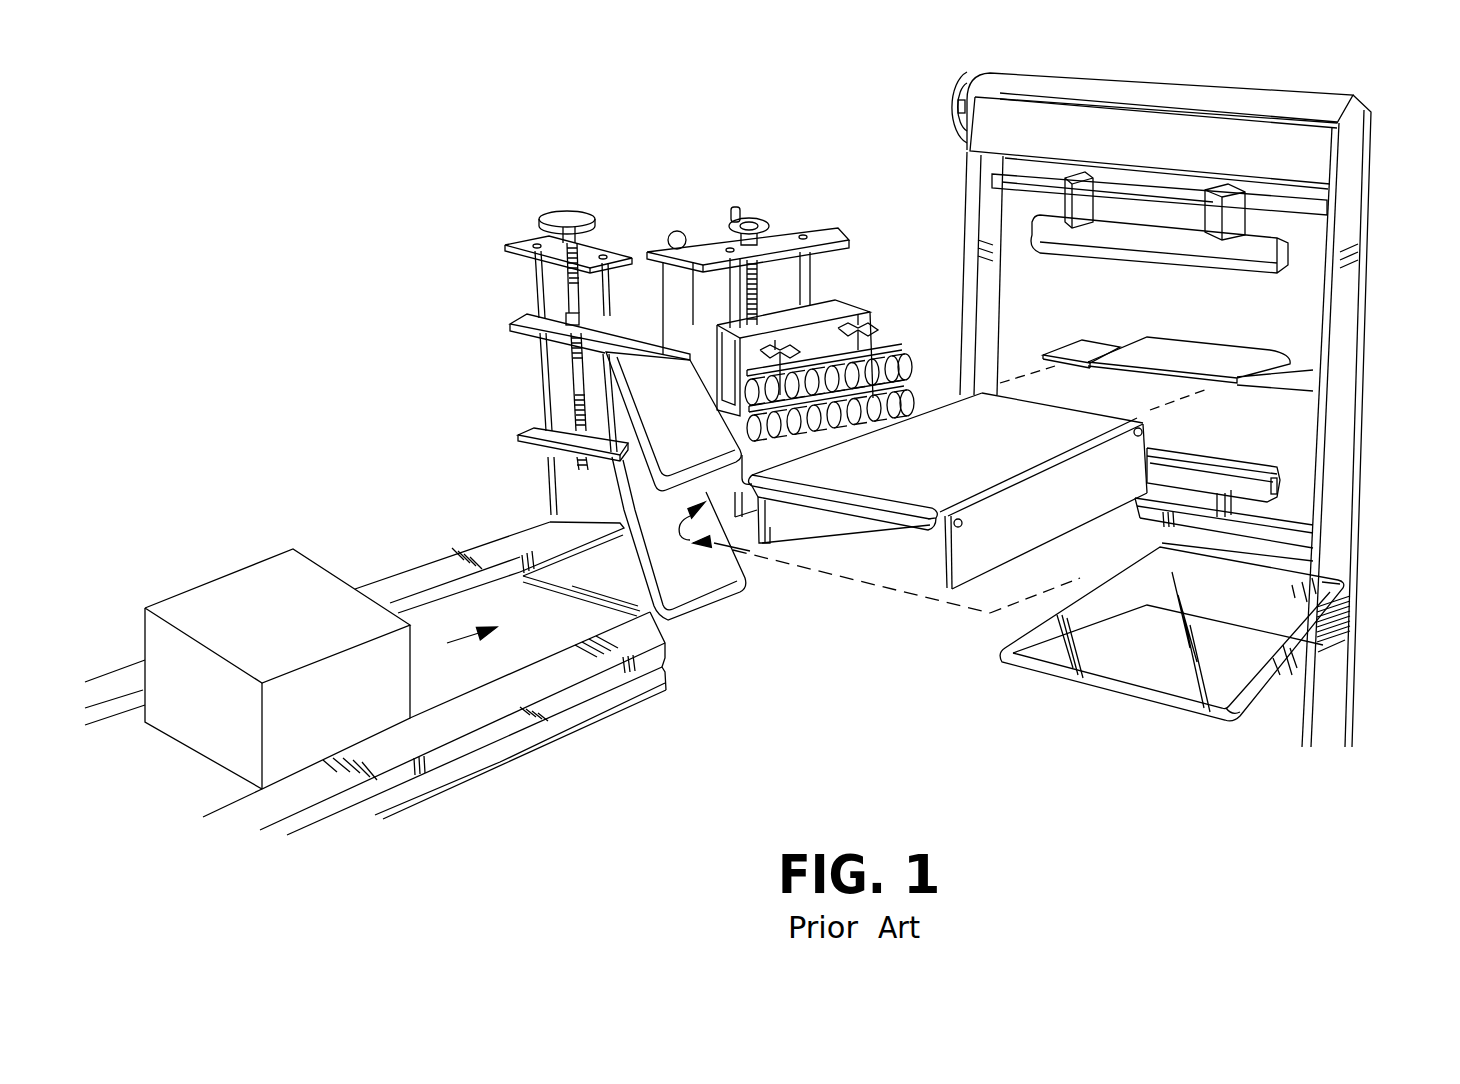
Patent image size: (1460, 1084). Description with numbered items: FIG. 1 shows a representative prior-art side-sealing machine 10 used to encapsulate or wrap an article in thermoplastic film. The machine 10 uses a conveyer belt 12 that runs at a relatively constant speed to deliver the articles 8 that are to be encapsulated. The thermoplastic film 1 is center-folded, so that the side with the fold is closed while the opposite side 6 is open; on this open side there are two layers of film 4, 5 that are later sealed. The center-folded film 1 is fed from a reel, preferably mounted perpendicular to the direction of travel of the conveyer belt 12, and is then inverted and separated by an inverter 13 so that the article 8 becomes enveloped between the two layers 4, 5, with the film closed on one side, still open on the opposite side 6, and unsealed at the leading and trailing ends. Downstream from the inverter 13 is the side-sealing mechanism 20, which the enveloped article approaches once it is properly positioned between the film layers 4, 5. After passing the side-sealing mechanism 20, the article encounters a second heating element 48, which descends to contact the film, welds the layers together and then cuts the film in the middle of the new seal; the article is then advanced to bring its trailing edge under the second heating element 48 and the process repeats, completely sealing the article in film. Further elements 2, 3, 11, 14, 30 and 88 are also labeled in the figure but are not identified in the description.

The thermoplastic film 1 is at (1157, 677).
The frame 2 is at (1078, 603).
The frame corner 3 is at (1238, 708).
The layer of film 4 is at (1325, 585).
The layer of film 5 is at (1327, 660).
The opposite side 6 is at (1337, 644).
The article 8 is at (240, 578).
The machine 10 is at (470, 272).
The conveyor rail 11 is at (400, 578).
The conveyer belt 12 is at (430, 682).
The inverter 13 is at (700, 615).
The platform 14 is at (950, 407).
The side-sealing mechanism 20 is at (695, 212).
The frame 30 is at (1405, 258).
The second heating element 48 is at (1035, 230).
The lower channel 88 is at (1290, 472).